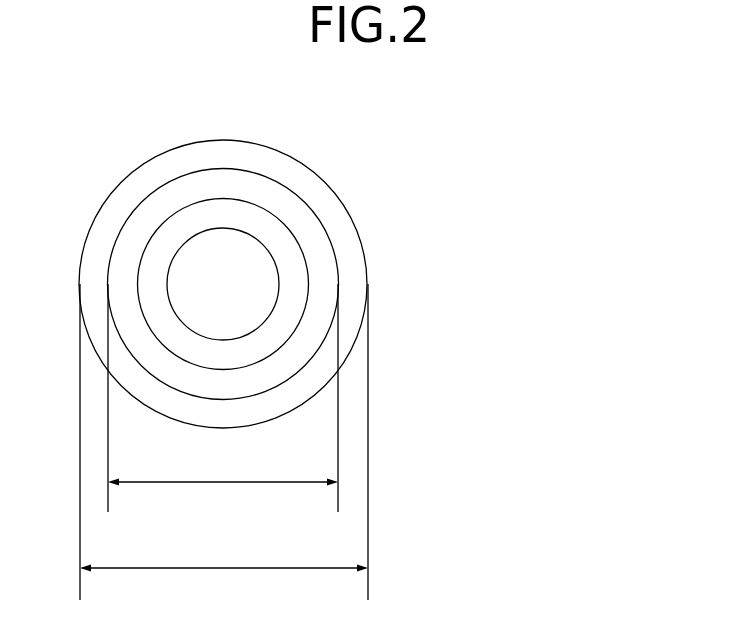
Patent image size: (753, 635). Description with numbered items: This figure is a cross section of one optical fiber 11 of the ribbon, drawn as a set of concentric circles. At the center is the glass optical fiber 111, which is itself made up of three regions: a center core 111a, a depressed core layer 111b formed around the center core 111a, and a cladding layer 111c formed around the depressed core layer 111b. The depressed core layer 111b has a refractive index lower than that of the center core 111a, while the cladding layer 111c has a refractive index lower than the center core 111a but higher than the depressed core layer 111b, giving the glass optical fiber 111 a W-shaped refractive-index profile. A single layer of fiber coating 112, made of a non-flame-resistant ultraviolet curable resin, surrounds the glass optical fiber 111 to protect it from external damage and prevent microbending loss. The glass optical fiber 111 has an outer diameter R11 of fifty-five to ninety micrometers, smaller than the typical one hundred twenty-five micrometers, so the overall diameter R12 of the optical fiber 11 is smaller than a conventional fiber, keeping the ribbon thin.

The optical fiber 11 is at (372, 135).
The glass optical fiber 111 is at (550, 212).
The center core 111a is at (222, 283).
The depressed core layer 111b is at (245, 350).
The cladding layer 111c is at (320, 293).
The fiber coating 112 is at (328, 213).
The outer diameter of the glass optical fiber R11 is at (223, 464).
The diameter of the optical fiber R12 is at (224, 550).